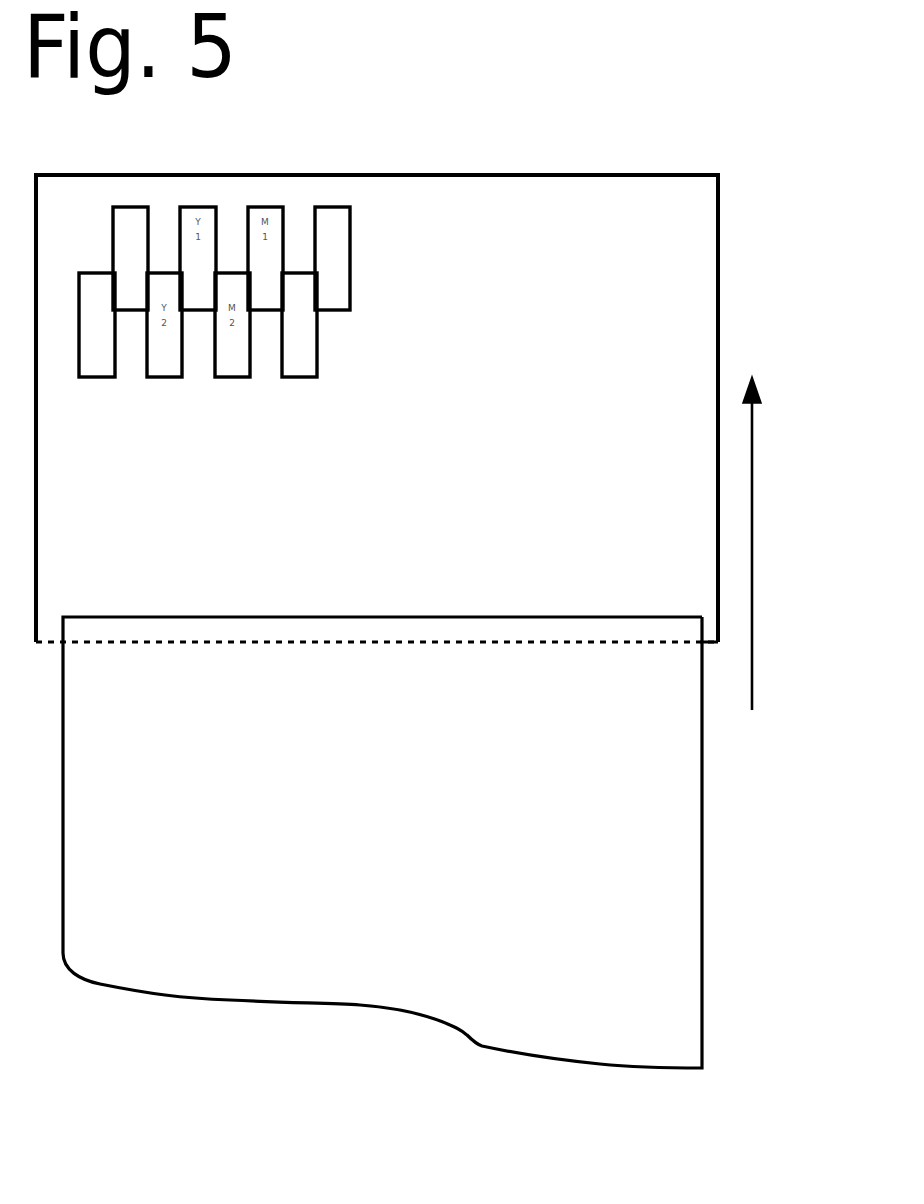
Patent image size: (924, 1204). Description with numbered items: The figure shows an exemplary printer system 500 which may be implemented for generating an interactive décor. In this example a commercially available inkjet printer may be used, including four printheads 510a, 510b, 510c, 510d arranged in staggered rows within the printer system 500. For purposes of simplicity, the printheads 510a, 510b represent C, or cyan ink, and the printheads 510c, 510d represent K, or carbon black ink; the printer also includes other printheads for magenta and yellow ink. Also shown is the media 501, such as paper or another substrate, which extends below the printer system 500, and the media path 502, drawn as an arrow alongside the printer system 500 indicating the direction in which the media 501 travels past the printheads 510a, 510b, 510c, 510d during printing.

The printer system 500 is at (618, 140).
The media 501 is at (703, 841).
The media path 502 is at (753, 490).
The printhead 510a is at (131, 207).
The printhead 510b is at (115, 378).
The printhead 510c is at (333, 207).
The printhead 510d is at (298, 378).